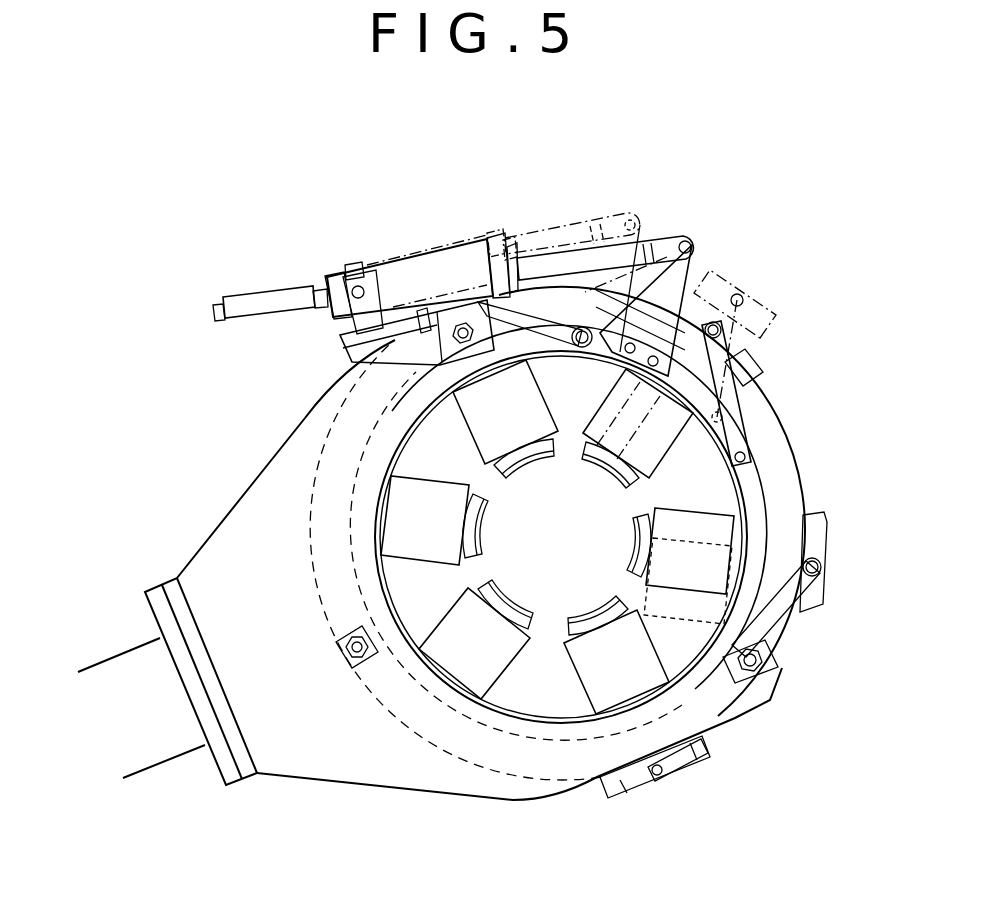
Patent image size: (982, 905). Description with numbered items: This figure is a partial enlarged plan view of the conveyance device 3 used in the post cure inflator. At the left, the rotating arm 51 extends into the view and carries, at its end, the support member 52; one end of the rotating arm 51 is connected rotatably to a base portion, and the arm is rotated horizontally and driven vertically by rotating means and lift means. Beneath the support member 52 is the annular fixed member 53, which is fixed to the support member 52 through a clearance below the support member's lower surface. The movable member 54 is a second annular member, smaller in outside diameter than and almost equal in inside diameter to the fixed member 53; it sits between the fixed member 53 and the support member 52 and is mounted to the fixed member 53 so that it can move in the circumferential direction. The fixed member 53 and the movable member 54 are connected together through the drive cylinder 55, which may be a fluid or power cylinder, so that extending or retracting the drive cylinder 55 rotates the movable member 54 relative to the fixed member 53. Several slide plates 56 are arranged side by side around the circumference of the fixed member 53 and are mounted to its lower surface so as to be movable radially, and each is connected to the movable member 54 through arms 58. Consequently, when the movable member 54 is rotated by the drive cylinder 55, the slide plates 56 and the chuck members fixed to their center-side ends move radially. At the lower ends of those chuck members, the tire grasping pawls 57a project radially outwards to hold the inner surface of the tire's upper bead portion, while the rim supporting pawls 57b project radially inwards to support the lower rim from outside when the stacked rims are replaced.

The conveyance device 3 is at (192, 218).
The rotating arm 51 is at (127, 668).
The support member 52 is at (226, 578).
The fixed member 53 is at (763, 437).
The movable member 54 is at (752, 482).
The drive cylinder 55 is at (426, 270).
The slide plates 56 is at (490, 427).
The tire grasping pawls 57a is at (576, 541).
The rim supporting pawls 57b is at (645, 542).
The arms 58 is at (730, 423).